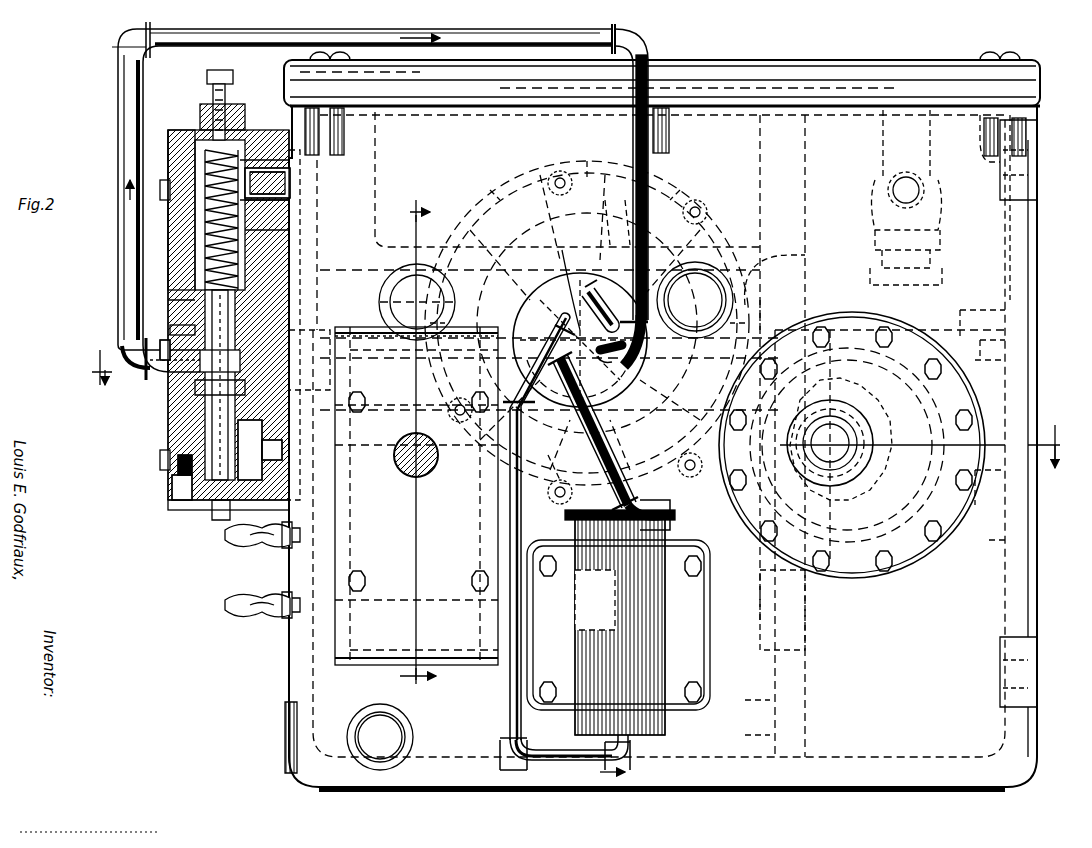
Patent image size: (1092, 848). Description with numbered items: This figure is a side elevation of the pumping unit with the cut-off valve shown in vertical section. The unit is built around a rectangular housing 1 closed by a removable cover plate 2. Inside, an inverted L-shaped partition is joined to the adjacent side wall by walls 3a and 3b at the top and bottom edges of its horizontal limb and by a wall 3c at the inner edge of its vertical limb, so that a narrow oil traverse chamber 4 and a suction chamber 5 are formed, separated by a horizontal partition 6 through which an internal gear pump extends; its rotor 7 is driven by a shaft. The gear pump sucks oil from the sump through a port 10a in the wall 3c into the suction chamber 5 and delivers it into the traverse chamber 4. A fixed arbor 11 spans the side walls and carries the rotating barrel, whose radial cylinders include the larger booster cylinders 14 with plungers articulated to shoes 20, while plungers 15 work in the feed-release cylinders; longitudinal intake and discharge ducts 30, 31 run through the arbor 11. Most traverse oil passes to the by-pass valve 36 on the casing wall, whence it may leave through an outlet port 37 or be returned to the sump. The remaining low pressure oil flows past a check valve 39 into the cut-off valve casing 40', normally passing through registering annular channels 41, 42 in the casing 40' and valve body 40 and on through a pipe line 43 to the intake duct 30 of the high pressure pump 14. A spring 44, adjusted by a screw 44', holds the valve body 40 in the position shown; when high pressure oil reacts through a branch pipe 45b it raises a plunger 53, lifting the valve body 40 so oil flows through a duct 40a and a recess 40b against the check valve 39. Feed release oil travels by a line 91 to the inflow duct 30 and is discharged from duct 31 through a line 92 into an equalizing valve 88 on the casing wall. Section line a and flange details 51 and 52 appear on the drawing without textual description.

The housing 1 is at (661, 448).
The cover plate 2 is at (758, 64).
The wall 3a is at (612, 252).
The wall 3b is at (552, 460).
The wall 3c is at (745, 663).
The oil traverse chamber 4 is at (812, 270).
The suction chamber 5 is at (1002, 535).
The horizontal partition 6 is at (948, 350).
The rotor 7 is at (905, 355).
The port 10a is at (750, 734).
The fixed arbor 11 is at (546, 290).
The booster or accumulator pump cylinders 14 is at (600, 296).
The plungers 15 is at (568, 279).
The shoes 20 is at (490, 205).
The intake duct 30 is at (542, 362).
The discharge duct 31 is at (545, 318).
The traverse oil by-pass valve 36 is at (342, 548).
The outlet port 37 is at (412, 466).
The check valve 39 is at (301, 325).
The valve body 40 is at (203, 320).
The cut-off valve casing 40' is at (167, 210).
The duct 40a is at (258, 442).
The recess 40b is at (212, 405).
The annular channel 41 is at (196, 386).
The annular channel 42 is at (178, 330).
The pipe line 43 is at (124, 105).
The spring 44 is at (192, 197).
The screw 44' is at (204, 102).
The branch pipe 45b is at (222, 522).
The flange 51 is at (270, 224).
The flange 52 is at (282, 174).
The plunger 53 is at (174, 462).
The equalizing valve 88 is at (618, 622).
The line 91 is at (657, 490).
The line 92 is at (508, 691).
The section line a is at (100, 366).